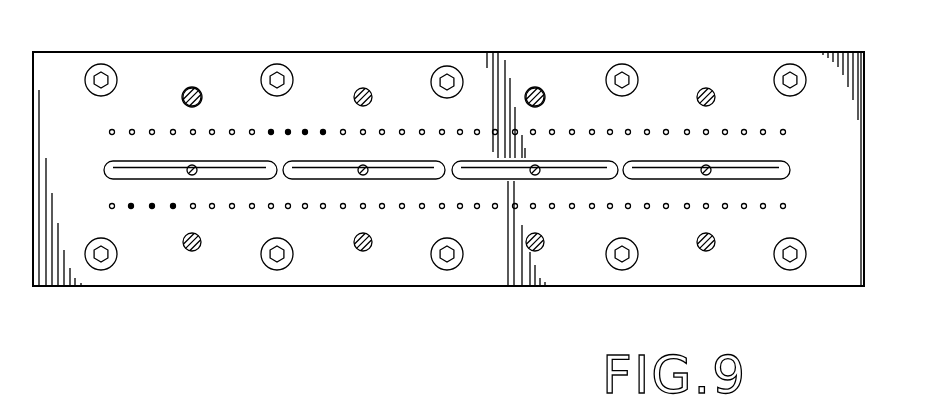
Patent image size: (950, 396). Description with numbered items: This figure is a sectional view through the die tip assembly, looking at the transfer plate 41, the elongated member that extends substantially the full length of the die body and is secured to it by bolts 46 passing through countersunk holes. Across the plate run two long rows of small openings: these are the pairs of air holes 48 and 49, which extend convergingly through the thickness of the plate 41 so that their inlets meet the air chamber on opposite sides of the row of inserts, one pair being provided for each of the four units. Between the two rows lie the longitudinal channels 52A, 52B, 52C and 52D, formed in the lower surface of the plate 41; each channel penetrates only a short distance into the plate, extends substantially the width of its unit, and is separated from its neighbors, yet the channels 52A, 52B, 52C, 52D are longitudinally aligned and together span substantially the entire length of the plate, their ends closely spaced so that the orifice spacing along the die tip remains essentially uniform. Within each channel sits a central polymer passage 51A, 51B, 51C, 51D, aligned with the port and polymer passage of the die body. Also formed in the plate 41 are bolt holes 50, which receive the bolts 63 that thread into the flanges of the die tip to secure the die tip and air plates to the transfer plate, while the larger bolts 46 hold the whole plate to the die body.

The transfer plate 41 is at (452, 53).
The bolts 46 is at (102, 78).
The air holes 48 is at (323, 130).
The air holes 49 is at (130, 209).
The bolt holes 50 is at (199, 90).
The central polymer passage 51A is at (193, 175).
The central polymer passage 51B is at (362, 175).
The central polymer passage 51C is at (534, 175).
The central polymer passage 51D is at (708, 175).
The longitudinal channel 52A is at (218, 171).
The longitudinal channel 52B is at (395, 171).
The longitudinal channel 52C is at (563, 171).
The longitudinal channel 52D is at (777, 172).
The bolts 63 is at (189, 90).